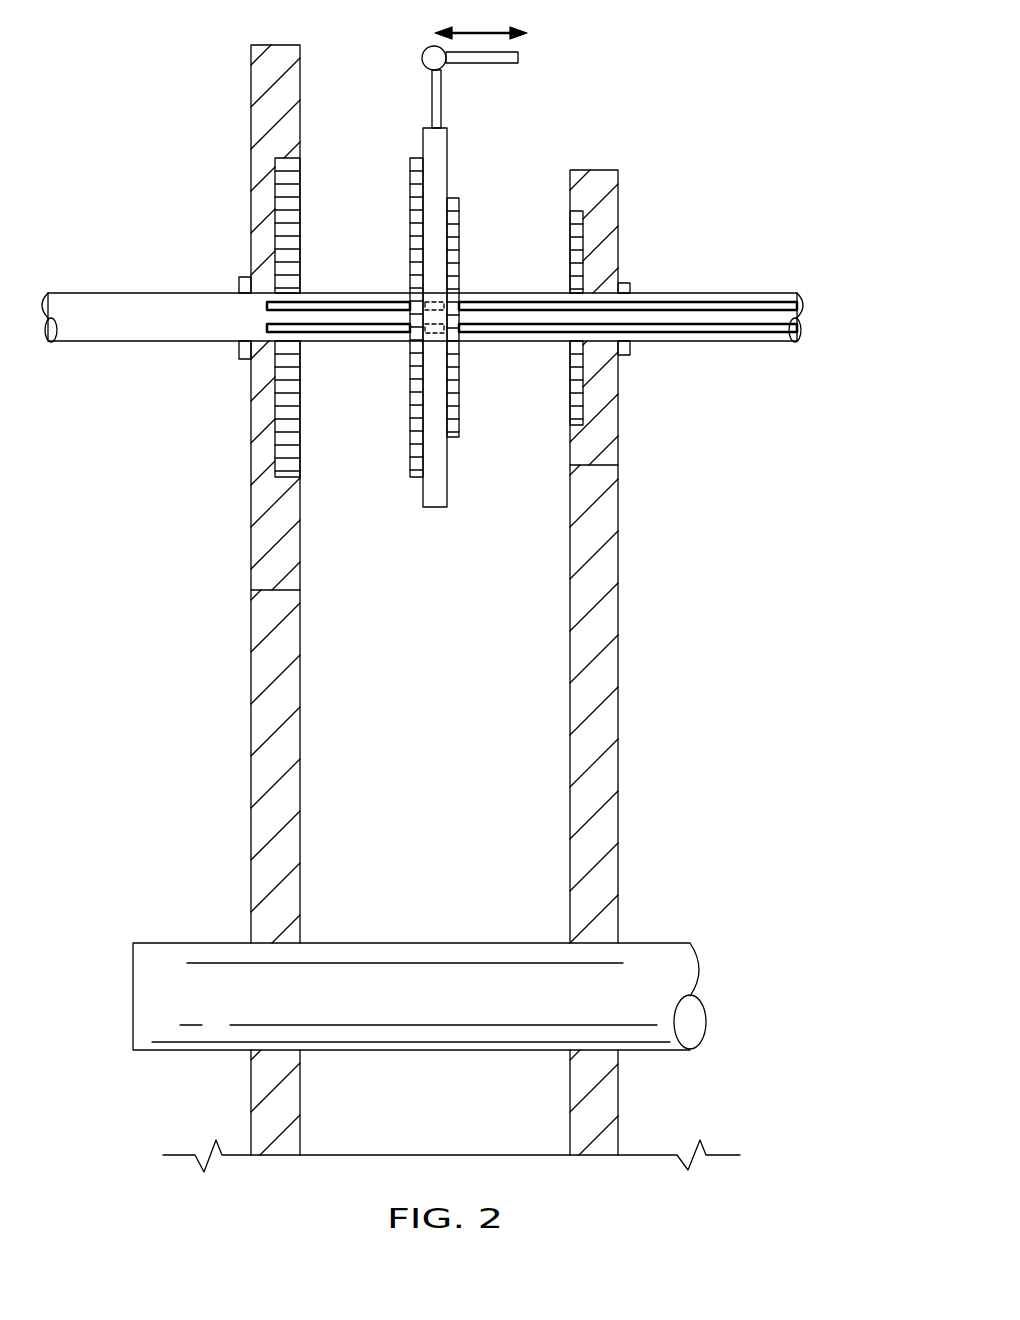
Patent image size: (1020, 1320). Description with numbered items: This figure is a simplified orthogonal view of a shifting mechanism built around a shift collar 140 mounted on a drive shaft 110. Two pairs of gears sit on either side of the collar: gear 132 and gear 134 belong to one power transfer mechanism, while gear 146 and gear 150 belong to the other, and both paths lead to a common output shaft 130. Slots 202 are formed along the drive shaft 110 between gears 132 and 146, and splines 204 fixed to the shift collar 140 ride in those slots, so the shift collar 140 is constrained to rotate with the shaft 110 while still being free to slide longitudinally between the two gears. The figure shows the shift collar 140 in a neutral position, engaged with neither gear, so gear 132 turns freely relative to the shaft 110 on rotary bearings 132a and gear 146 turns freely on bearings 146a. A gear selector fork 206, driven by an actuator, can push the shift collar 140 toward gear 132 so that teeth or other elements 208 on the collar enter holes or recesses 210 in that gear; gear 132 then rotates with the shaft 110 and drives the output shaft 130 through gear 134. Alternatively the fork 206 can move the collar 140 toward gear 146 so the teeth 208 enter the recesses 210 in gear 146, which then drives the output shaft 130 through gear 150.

The drive shaft 110 is at (118, 293).
The output shaft 130 is at (655, 1052).
The gear 132 is at (247, 115).
The rotary bearings 132a is at (239, 285).
The gear 134 is at (251, 778).
The shift collar 140 is at (422, 148).
The gear 146 is at (604, 166).
The bearings 146a is at (630, 288).
The gear 150 is at (618, 733).
The slots 202 is at (748, 293).
The splines 204 is at (430, 300).
The gear selector fork 206 is at (478, 66).
The teeth or other elements 208 is at (410, 222).
The holes or recesses 210 is at (300, 197).